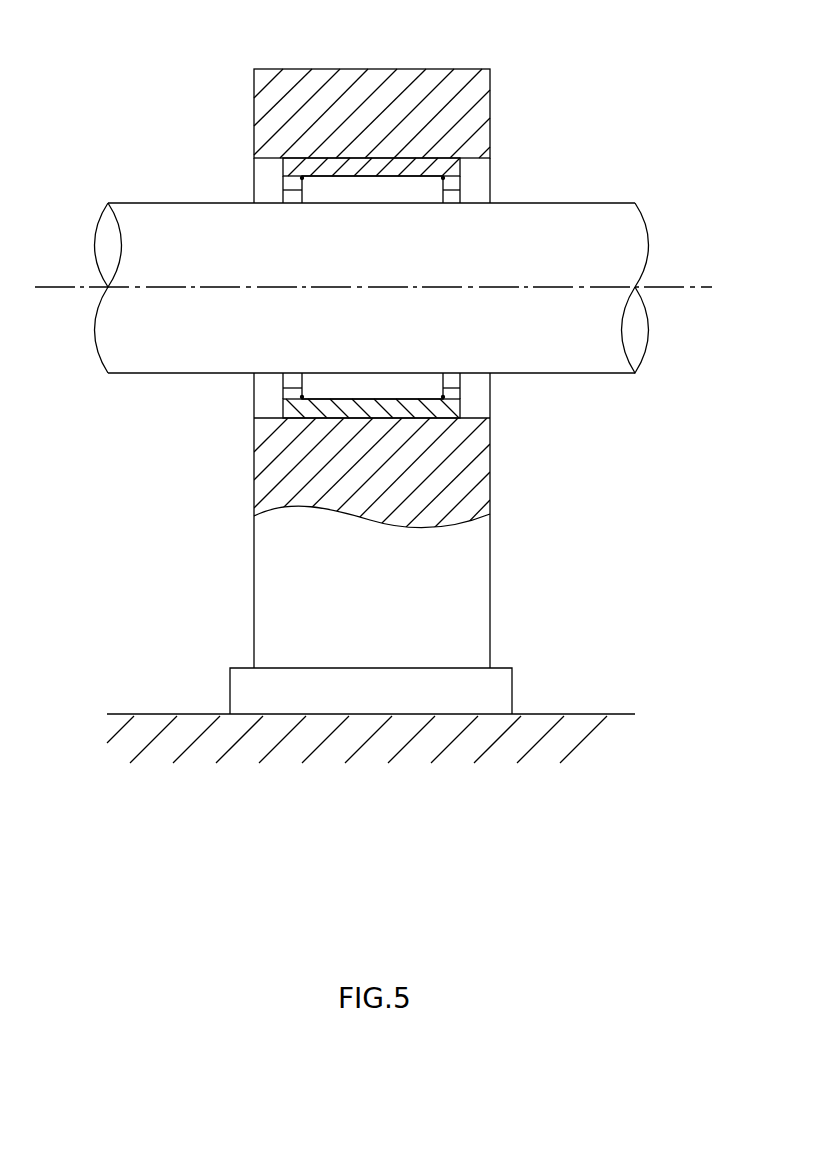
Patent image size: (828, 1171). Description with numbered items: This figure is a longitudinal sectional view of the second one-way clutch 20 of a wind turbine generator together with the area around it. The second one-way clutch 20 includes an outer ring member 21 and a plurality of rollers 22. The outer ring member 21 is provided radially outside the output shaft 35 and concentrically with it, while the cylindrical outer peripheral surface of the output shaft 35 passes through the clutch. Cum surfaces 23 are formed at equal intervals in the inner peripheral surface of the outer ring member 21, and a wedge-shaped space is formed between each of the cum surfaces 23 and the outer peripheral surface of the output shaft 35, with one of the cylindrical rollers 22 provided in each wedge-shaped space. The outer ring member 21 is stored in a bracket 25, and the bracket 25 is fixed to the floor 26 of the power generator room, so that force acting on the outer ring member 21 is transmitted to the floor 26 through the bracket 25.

The second one-way clutch 20 is at (478, 176).
The outer ring member 21 is at (333, 165).
The rollers 22 is at (410, 192).
The cum surfaces 23 is at (374, 172).
The bracket 25 is at (263, 102).
The floor 26 is at (578, 714).
The output shaft 35 is at (158, 203).